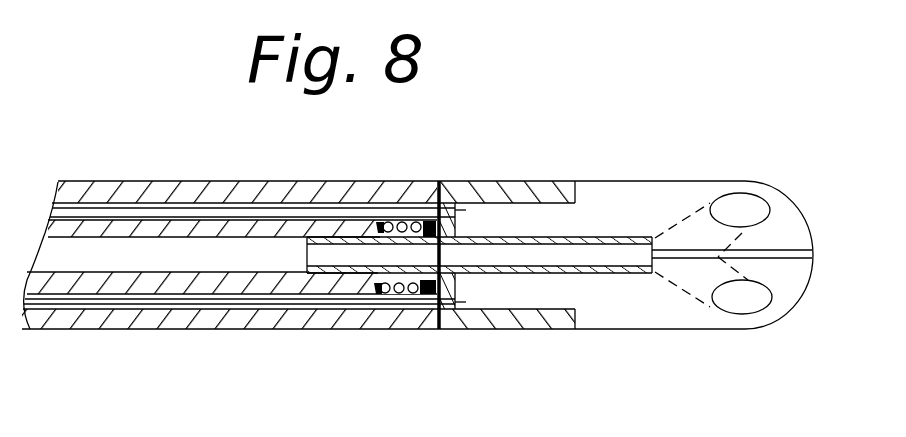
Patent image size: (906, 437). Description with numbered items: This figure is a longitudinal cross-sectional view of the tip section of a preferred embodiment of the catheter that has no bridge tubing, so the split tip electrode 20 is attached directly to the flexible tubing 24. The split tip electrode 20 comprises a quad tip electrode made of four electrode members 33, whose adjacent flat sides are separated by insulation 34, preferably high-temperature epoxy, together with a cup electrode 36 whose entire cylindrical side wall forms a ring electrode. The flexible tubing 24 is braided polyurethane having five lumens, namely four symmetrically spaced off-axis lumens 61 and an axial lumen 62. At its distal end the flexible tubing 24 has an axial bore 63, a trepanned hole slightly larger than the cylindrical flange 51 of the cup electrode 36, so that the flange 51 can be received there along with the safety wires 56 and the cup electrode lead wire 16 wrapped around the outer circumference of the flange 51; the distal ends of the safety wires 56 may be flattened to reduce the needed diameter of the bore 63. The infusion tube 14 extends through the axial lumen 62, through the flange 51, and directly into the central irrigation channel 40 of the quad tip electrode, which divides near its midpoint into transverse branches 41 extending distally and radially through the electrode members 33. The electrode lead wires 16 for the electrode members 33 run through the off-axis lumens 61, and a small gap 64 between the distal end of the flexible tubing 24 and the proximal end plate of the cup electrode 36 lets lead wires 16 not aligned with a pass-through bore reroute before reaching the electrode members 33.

The infusion tube 14 is at (330, 236).
The electrode lead wires 16 is at (122, 217).
The split tip electrode 20 is at (590, 131).
The flexible tubing 24 is at (204, 182).
The electrode members 33 is at (781, 220).
The insulation 34 is at (810, 227).
The cup electrode 36 is at (517, 329).
The central irrigation channel 40 is at (667, 273).
The transverse branches 41 is at (697, 225).
The cylindrical flange 51 is at (372, 290).
The safety wires 56 is at (405, 222).
The off-axis lumens 61 is at (90, 220).
The axial lumen 62 is at (287, 253).
The axial bore 63 is at (420, 290).
The gap 64 is at (438, 325).